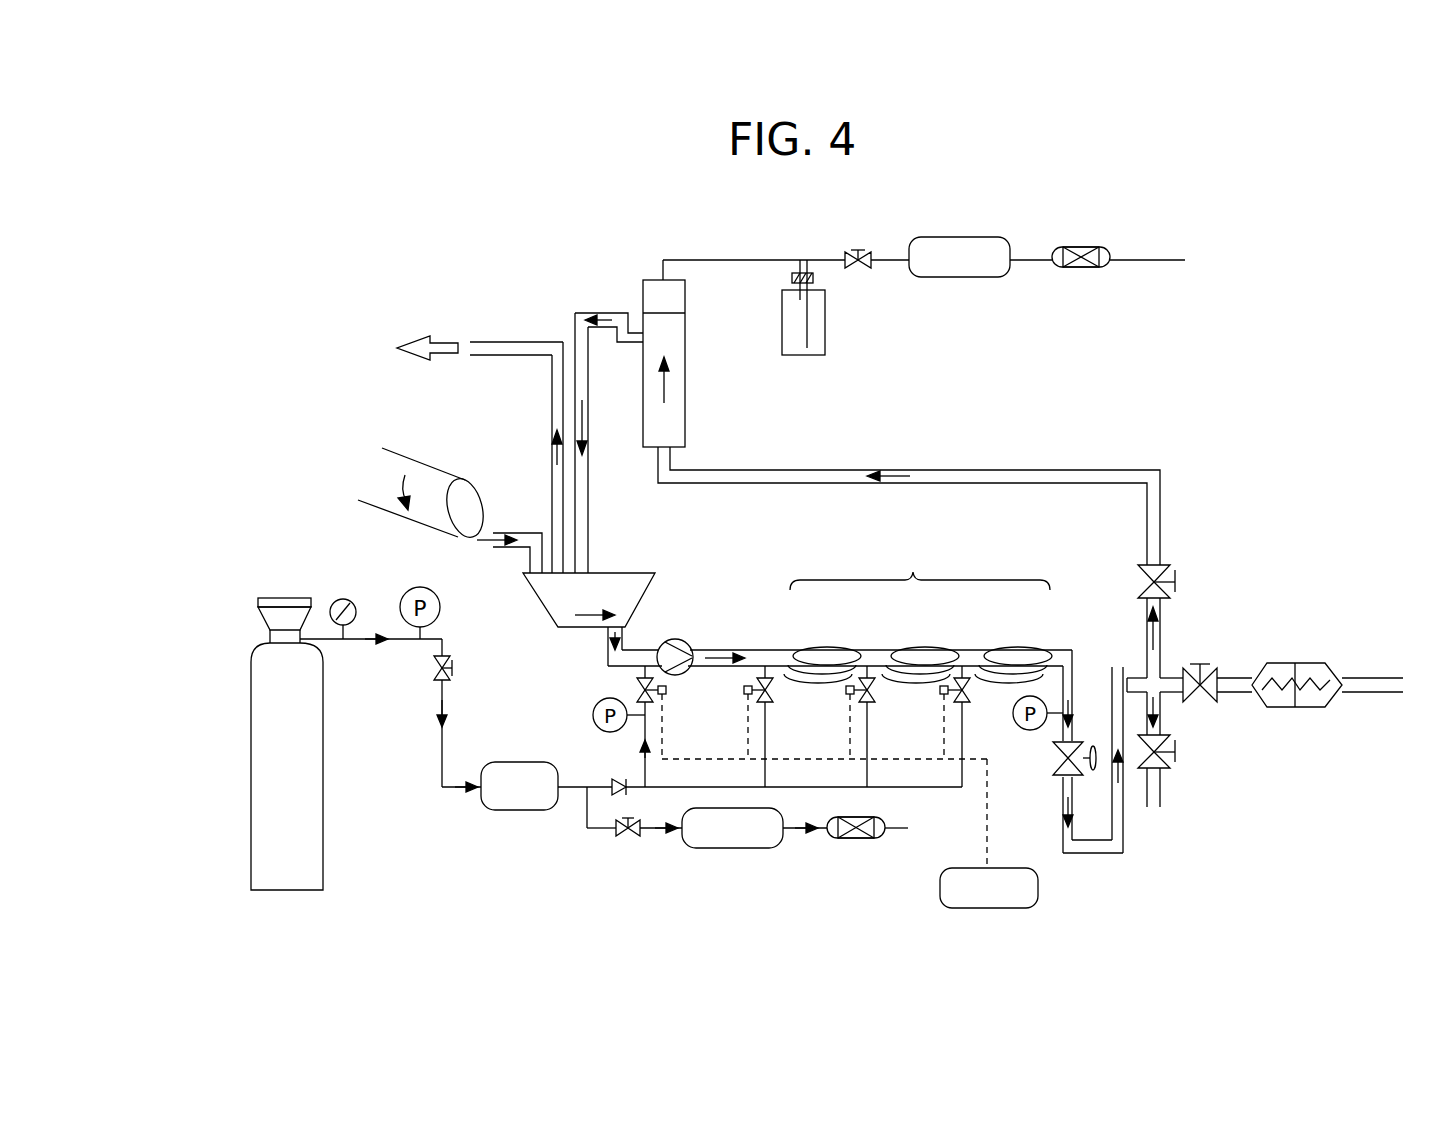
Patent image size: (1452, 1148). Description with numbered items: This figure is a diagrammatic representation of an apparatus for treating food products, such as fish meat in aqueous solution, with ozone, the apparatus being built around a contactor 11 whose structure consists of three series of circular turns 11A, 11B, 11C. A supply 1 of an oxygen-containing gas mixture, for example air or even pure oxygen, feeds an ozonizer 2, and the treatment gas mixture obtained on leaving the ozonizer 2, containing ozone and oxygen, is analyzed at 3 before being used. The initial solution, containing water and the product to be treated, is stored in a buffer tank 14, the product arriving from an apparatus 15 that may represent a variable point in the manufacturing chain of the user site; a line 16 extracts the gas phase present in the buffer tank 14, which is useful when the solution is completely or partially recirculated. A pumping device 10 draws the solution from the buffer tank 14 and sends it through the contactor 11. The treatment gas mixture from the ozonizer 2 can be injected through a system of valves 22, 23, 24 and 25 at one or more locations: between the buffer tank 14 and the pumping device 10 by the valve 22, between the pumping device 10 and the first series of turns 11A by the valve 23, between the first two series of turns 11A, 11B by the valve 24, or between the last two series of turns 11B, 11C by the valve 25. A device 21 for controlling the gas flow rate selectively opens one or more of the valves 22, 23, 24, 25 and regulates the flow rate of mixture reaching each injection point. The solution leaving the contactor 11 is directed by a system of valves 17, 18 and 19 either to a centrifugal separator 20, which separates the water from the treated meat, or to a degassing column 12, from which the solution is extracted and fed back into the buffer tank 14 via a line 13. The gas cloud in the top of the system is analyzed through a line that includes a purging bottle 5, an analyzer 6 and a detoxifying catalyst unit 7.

The supply 1 is at (323, 740).
The ozonizer 2 is at (520, 812).
The analysis 3 is at (718, 848).
The purging bottle 5 is at (826, 318).
The analyzer 6 is at (968, 277).
The detoxifying catalyst unit 7 is at (855, 838).
The pumping device 10 is at (673, 637).
The contactor 11 is at (920, 566).
The first series of turns 11A is at (800, 645).
The second series of turns 11B is at (900, 645).
The last series of turns 11C is at (993, 648).
The degassing column 12 is at (687, 385).
The line 13 is at (590, 413).
The buffer tank 14 is at (613, 570).
The apparatus 15 is at (437, 472).
The line 16 is at (485, 337).
The valve 17 is at (1178, 583).
The valve 18 is at (1190, 700).
The valve 19 is at (1168, 760).
The centrifugal separator 20 is at (1298, 663).
The device for controlling the gas flow rate 21 is at (1028, 908).
The valve 22 is at (640, 688).
The valve 23 is at (772, 695).
The valve 24 is at (873, 695).
The valve 25 is at (968, 695).